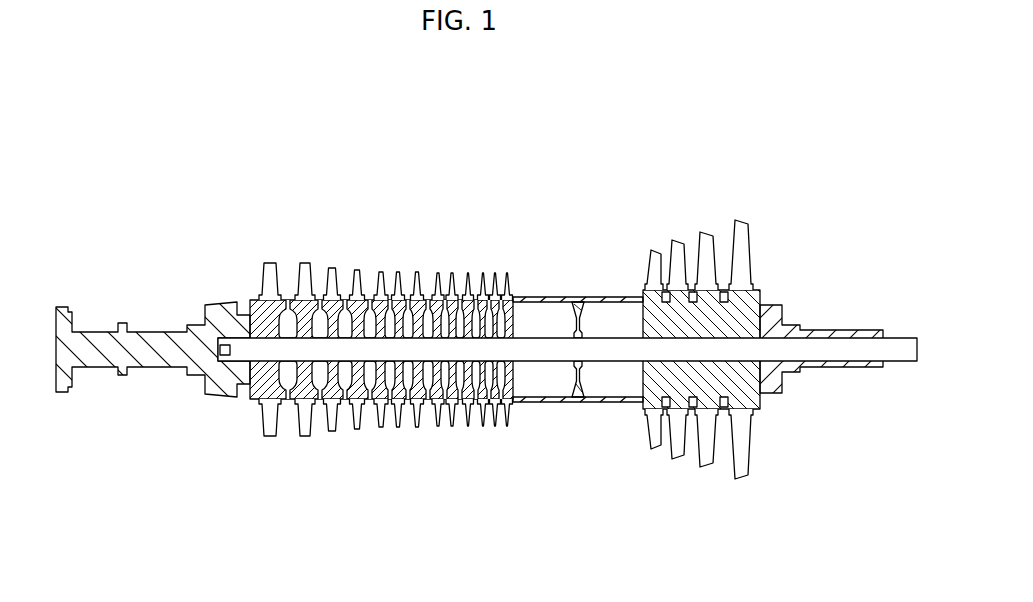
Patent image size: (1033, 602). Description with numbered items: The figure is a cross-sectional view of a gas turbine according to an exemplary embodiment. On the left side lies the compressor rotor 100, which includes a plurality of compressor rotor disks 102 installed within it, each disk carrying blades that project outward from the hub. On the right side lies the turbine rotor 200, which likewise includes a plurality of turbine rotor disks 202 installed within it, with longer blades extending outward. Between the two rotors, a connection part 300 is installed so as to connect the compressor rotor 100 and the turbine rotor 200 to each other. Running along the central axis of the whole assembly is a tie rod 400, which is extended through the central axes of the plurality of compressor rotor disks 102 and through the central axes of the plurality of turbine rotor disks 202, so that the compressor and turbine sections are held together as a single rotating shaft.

The compressor rotor 100 is at (381, 342).
The compressor rotor disks 102 is at (392, 291).
The turbine rotor 200 is at (701, 342).
The turbine rotor disks 202 is at (745, 300).
The connection part 300 is at (578, 298).
The tie rod 400 is at (611, 352).